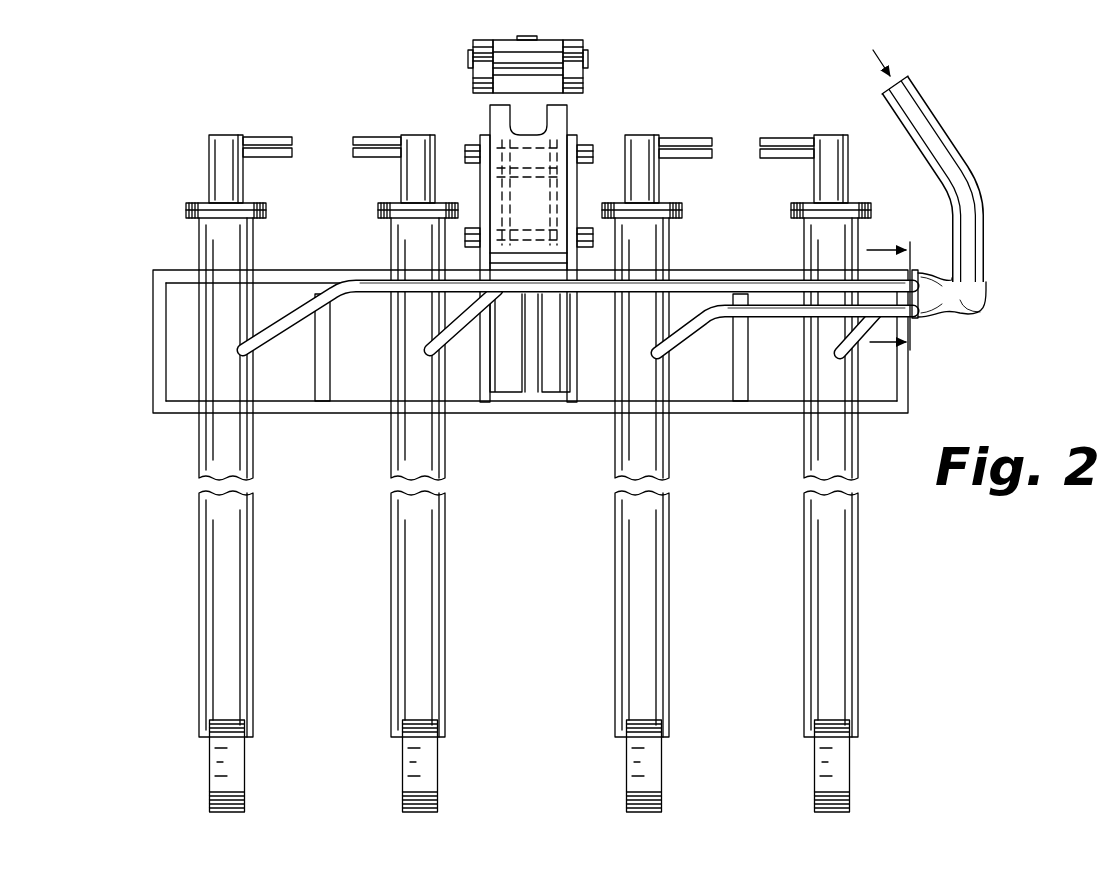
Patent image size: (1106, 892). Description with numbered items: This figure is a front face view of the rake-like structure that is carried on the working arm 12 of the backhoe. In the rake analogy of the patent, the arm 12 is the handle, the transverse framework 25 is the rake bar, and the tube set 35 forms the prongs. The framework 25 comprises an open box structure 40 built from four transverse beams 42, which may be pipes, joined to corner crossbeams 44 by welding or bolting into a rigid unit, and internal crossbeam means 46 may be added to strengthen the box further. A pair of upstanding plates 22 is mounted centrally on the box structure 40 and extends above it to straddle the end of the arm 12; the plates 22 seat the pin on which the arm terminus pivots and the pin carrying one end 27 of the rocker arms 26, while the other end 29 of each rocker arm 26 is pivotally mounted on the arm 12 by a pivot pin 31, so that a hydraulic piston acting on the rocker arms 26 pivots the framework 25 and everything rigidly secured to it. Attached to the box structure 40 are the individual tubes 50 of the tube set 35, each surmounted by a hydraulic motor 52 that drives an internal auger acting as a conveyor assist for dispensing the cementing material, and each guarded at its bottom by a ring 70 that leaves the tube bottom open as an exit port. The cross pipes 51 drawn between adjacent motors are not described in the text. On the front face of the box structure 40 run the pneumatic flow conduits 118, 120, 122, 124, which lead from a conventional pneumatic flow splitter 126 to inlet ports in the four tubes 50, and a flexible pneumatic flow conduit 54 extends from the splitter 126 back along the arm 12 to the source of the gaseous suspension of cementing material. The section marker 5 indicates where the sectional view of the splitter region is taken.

The section line 5- 5 is at (888, 296).
The working arm 12 is at (560, 172).
The upstanding plates 22 is at (567, 212).
The transverse framework 25 is at (917, 380).
The rocker arms 26 is at (583, 78).
The one end of rocker arm 27 is at (557, 117).
The other end of rocker arm 29 is at (588, 52).
The pivot pin 31 is at (590, 148).
The tube set 35 is at (188, 636).
The open box structure 40 is at (693, 395).
The transverse beams 42 is at (330, 248).
The corner crossbeams 44 is at (153, 333).
The internal crossbeam means 46 is at (320, 388).
The tubes 50 is at (392, 573).
The cross pipes 51 is at (353, 157).
The hydraulic motor 52 is at (210, 176).
The flexible pneumatic flow conduit 54 is at (937, 123).
The ring 70 is at (403, 768).
The pneumatic flow conduit 118 is at (297, 320).
The pneumatic flow conduit 120 is at (430, 340).
The pneumatic flow conduit 122 is at (677, 343).
The pneumatic flow conduit 124 is at (840, 333).
The pneumatic flow splitter 126 is at (943, 318).